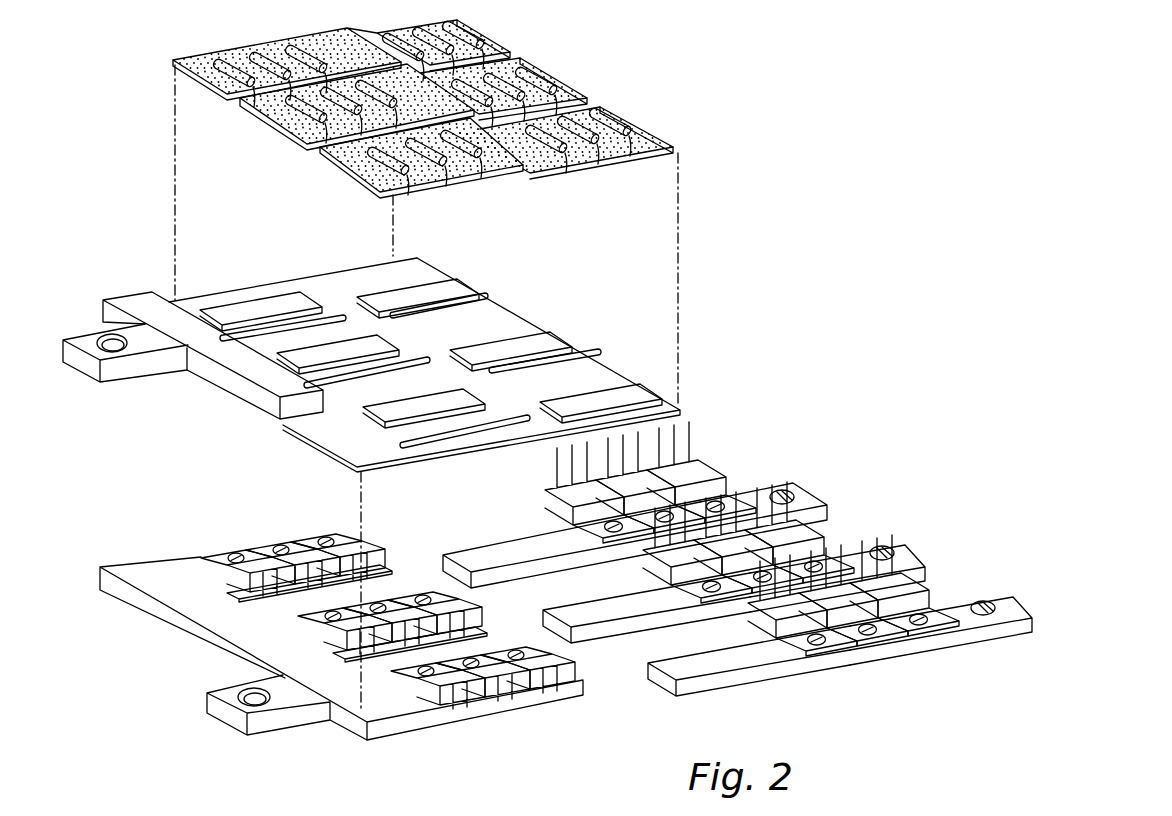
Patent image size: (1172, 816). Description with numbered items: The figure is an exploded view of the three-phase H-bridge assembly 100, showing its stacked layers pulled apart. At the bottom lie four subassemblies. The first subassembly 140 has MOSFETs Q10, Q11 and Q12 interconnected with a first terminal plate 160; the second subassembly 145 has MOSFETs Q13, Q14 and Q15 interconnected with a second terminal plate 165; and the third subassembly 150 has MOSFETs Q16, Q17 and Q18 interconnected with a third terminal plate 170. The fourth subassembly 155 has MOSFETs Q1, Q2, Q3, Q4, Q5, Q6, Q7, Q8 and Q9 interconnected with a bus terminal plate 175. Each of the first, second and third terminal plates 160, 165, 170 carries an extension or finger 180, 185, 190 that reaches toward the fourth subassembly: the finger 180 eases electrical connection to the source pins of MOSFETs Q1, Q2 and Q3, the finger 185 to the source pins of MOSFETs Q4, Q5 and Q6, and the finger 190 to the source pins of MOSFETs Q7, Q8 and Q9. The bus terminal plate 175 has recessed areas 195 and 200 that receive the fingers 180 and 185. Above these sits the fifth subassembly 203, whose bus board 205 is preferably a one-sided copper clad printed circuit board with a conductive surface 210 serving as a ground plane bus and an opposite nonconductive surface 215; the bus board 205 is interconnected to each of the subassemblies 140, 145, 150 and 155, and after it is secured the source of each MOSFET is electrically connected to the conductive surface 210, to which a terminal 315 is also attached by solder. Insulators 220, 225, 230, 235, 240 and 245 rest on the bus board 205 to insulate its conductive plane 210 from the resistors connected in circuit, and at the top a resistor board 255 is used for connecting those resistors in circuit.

The three-phase H-bridge assembly 100 is at (842, 124).
The resistor board 255 is at (637, 116).
The fifth subassembly 203 is at (555, 327).
The bus board 205 is at (352, 246).
The conductive surface 210 is at (490, 316).
The nonconductive surface 215 is at (280, 419).
The terminal 315 is at (142, 366).
The insulator 220 is at (272, 306).
The insulator 225 is at (418, 292).
The insulator 230 is at (303, 358).
The insulator 235 is at (514, 343).
The insulator 240 is at (385, 408).
The insulator 245 is at (666, 340).
The bus terminal plate 175 is at (402, 727).
The fourth subassembly 155 is at (337, 720).
The recessed area 195 is at (270, 610).
The recessed area 200 is at (356, 657).
The finger 180 is at (503, 567).
The finger 185 is at (598, 628).
The finger 190 is at (700, 683).
The first terminal plate 160 is at (832, 503).
The second terminal plate 165 is at (917, 559).
The third terminal plate 170 is at (1034, 614).
The first subassembly 140 is at (824, 493).
The second subassembly 145 is at (912, 542).
The third subassembly 150 is at (1015, 593).
The MOSFET Q1 is at (233, 560).
The MOSFET Q2 is at (277, 553).
The MOSFET Q3 is at (322, 545).
The MOSFET Q4 is at (330, 626).
The MOSFET Q5 is at (395, 618).
The MOSFET Q6 is at (432, 600).
The MOSFET Q7 is at (473, 700).
The MOSFET Q8 is at (522, 675).
The MOSFET Q9 is at (580, 662).
The MOSFET Q10 is at (582, 494).
The MOSFET Q11 is at (625, 483).
The MOSFET Q12 is at (688, 478).
The MOSFET Q13 is at (678, 552).
The MOSFET Q14 is at (728, 542).
The MOSFET Q15 is at (798, 536).
The MOSFET Q16 is at (788, 608).
The MOSFET Q17 is at (840, 598).
The MOSFET Q18 is at (888, 591).